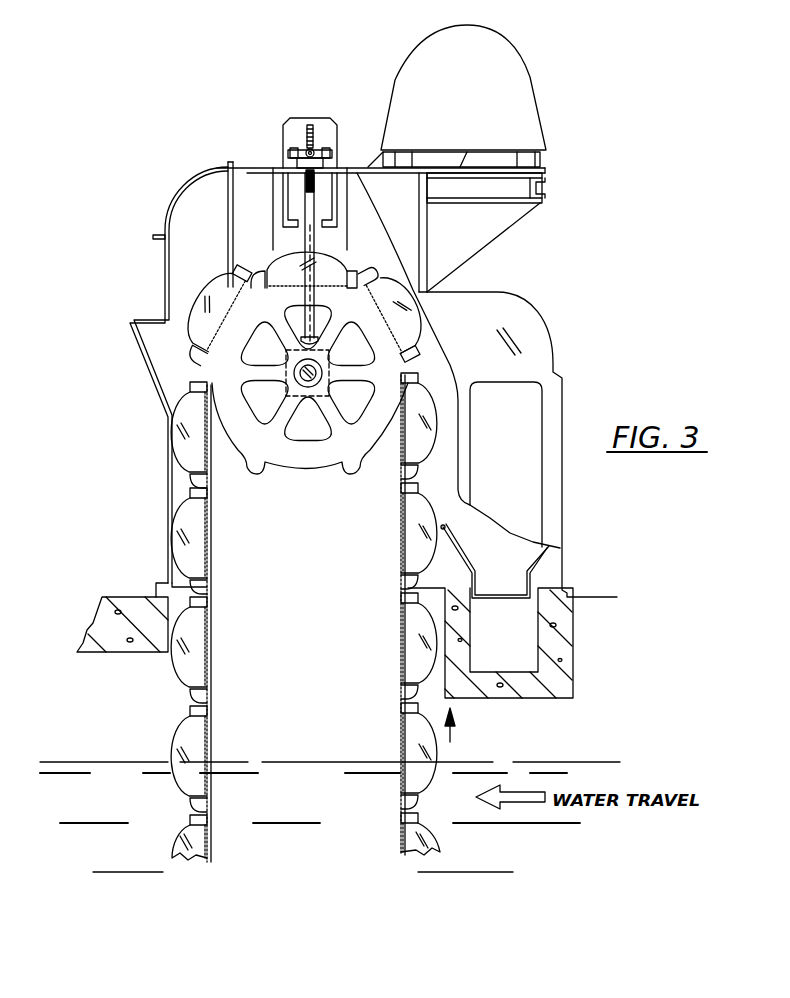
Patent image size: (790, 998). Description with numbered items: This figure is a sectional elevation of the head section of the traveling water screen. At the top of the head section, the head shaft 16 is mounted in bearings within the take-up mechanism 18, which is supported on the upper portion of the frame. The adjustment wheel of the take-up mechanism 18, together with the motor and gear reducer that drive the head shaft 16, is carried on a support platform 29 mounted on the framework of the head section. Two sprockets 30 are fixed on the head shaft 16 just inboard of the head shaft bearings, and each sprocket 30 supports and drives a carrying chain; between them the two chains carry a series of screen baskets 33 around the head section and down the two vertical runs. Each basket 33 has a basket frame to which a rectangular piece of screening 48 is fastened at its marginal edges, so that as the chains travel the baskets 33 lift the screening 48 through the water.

The head shaft 16 is at (307, 387).
The take-up mechanism 18 is at (285, 163).
The support platform 29 is at (408, 250).
The sprocket 30 is at (338, 476).
The screen basket 33 is at (265, 264).
The screening 48 is at (203, 451).